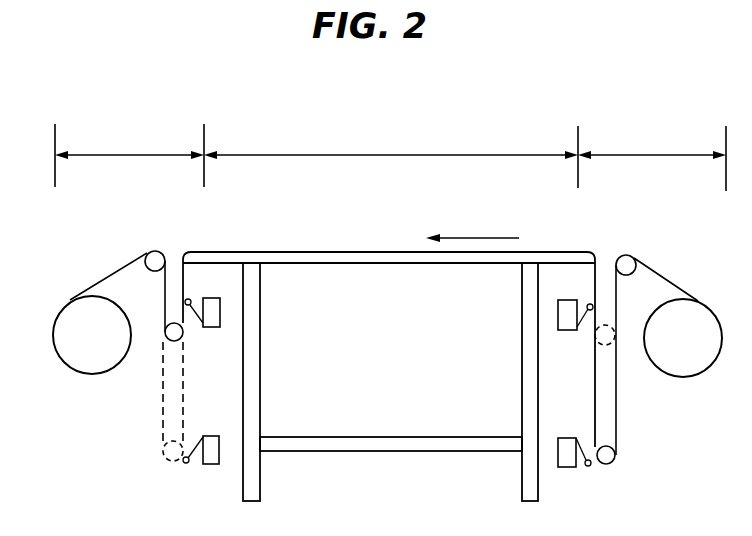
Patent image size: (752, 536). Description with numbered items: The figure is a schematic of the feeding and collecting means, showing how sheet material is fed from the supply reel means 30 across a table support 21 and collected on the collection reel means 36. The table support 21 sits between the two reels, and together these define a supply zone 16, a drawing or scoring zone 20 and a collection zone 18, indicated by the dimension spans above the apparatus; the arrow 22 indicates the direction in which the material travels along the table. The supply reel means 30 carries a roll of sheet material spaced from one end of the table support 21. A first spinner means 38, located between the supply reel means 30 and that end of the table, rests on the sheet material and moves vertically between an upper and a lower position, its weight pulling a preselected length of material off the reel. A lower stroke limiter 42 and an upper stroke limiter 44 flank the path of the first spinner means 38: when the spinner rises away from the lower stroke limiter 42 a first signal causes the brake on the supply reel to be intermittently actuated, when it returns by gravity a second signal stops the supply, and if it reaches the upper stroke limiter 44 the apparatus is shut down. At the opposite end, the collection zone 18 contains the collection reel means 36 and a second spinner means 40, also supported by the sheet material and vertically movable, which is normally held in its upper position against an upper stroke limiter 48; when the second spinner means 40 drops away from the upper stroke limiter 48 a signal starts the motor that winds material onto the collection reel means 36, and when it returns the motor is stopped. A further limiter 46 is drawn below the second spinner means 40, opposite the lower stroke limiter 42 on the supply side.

The supply zone 16 is at (641, 137).
The collection zone 18 is at (124, 130).
The drawing or scoring zone 20 is at (346, 139).
The table support 21 is at (367, 307).
The direction of web travel 22 is at (472, 225).
The supply reel means 30 is at (697, 318).
The collection reel means 36 is at (78, 318).
The first spinner means 38 is at (606, 455).
The second spinner means 40 is at (171, 345).
The lower stroke limiter 42 is at (573, 458).
The upper stroke limiter 44 is at (560, 318).
The sensor 46 is at (207, 452).
The upper stroke limiter 48 is at (215, 318).